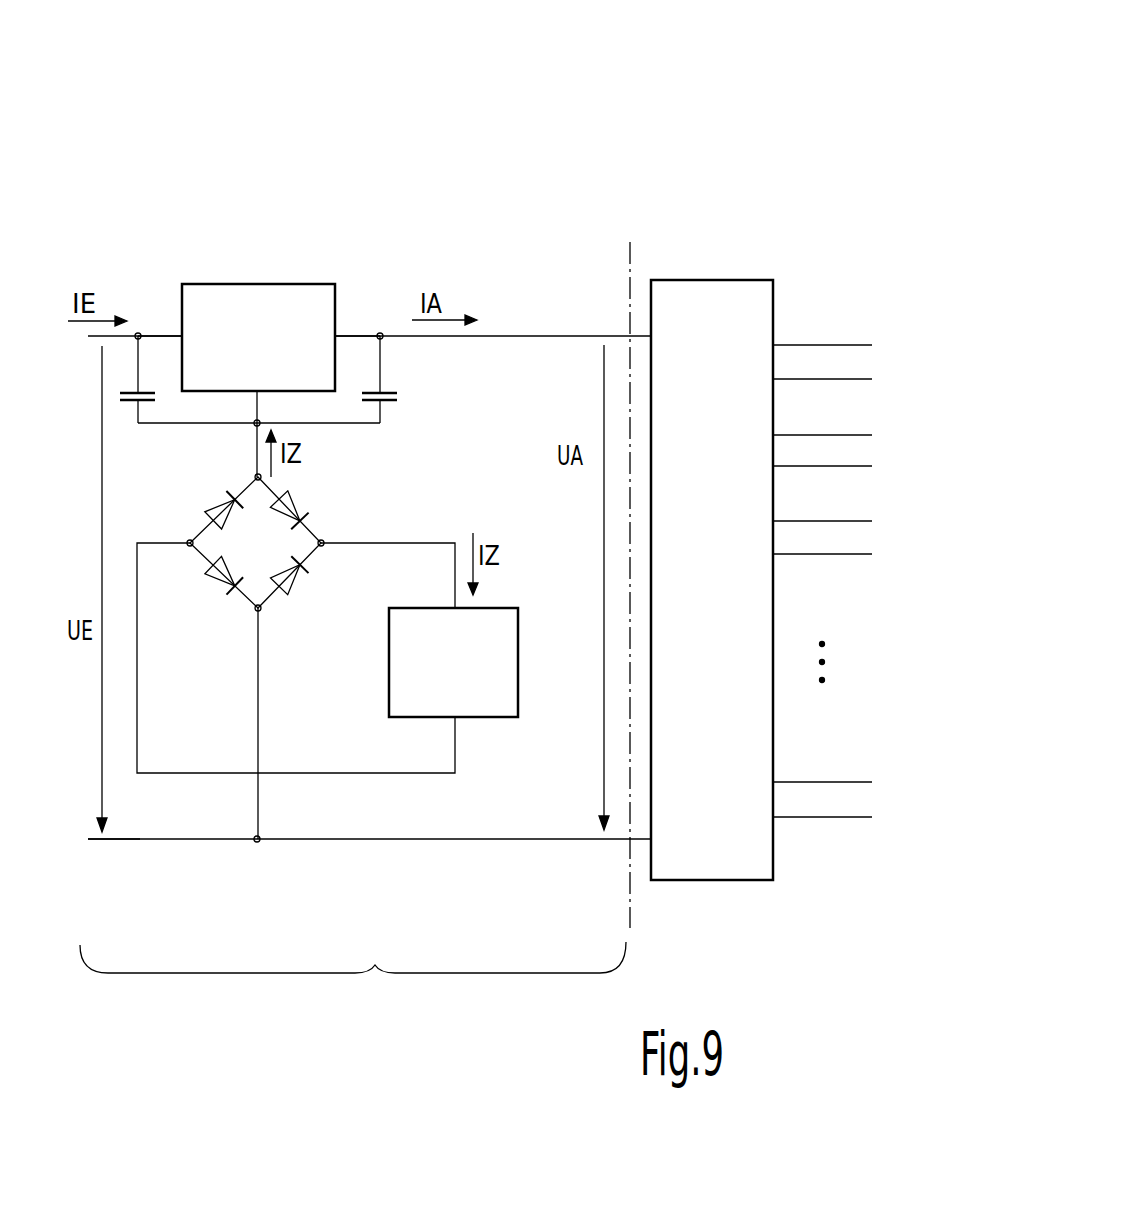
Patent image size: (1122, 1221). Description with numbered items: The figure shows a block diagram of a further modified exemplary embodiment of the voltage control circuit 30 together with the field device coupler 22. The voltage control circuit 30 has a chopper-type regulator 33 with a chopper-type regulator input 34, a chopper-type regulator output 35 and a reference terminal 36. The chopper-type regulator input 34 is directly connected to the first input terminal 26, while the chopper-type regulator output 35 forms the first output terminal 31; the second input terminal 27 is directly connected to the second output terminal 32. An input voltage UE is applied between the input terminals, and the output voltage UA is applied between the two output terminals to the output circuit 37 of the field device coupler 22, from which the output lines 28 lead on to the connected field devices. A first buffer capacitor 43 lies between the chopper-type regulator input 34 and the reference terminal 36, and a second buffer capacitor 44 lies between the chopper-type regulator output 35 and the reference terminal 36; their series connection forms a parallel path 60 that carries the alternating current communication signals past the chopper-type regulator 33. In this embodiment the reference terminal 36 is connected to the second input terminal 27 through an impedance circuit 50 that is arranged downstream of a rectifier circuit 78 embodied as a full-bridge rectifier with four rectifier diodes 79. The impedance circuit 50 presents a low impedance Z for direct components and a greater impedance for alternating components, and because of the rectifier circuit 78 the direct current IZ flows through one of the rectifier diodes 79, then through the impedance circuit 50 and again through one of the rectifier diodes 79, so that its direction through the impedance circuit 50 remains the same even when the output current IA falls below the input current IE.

The field device coupler 22 is at (690, 153).
The first input terminal 26 is at (128, 332).
The second input terminal 27 is at (130, 840).
The output lines 28 is at (768, 341).
The voltage control circuit 30 is at (353, 976).
The first output terminal 31 is at (566, 335).
The second output terminal 32 is at (547, 840).
The chopper-type regulator 33 is at (257, 297).
The chopper-type regulator input 34 is at (182, 338).
The chopper-type regulator output 35 is at (337, 333).
The reference terminal 36 is at (258, 390).
The output circuit 37 is at (712, 303).
The first buffer capacitor 43 is at (123, 403).
The second buffer capacitor 44 is at (383, 405).
The impedance circuit 50 is at (488, 705).
The parallel path 60 is at (420, 393).
The rectifier circuit 78 is at (262, 582).
The rectifier diodes 79 is at (208, 513).